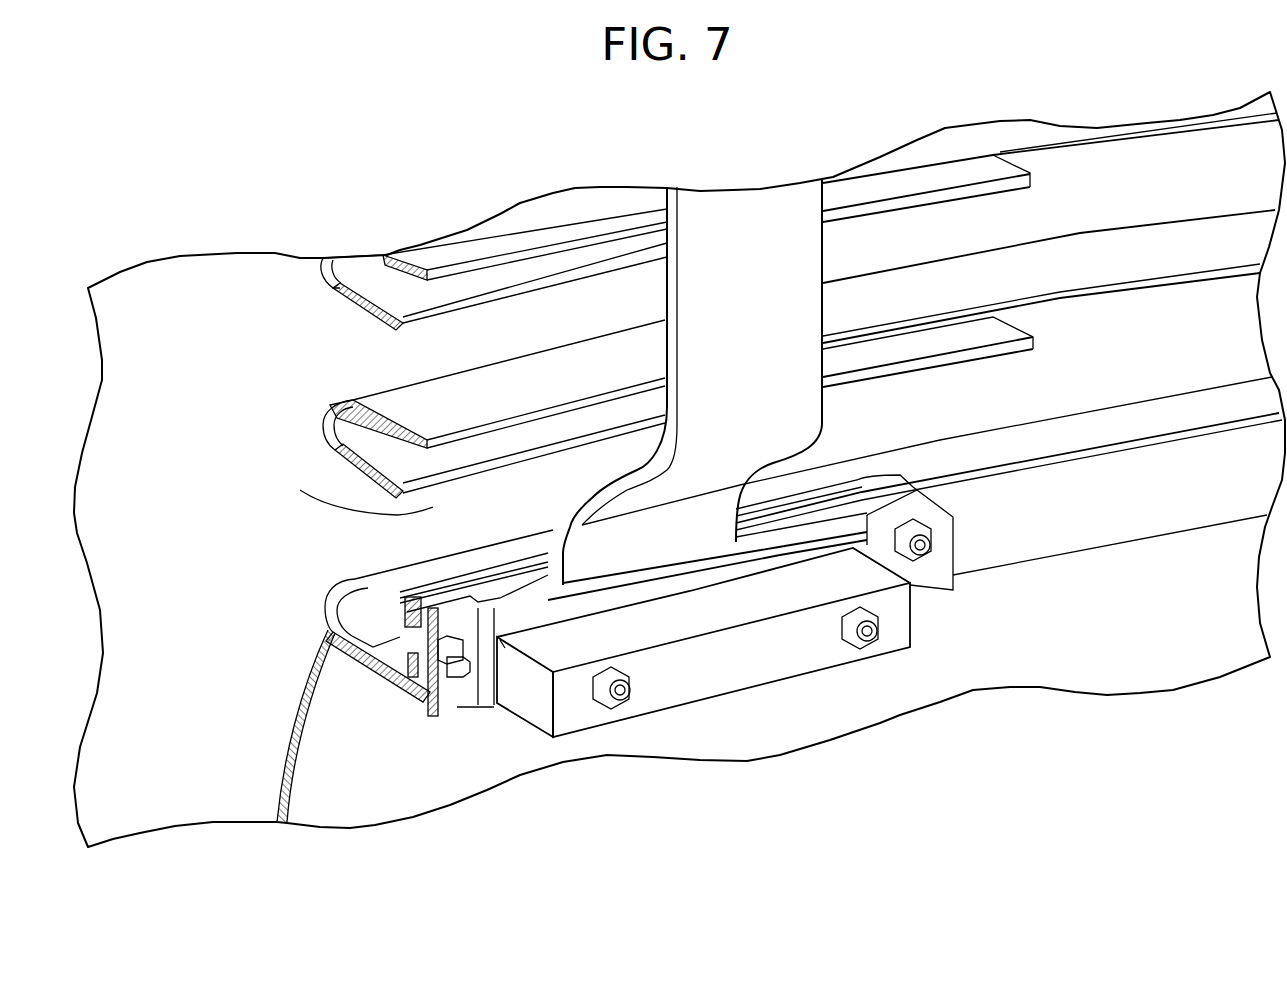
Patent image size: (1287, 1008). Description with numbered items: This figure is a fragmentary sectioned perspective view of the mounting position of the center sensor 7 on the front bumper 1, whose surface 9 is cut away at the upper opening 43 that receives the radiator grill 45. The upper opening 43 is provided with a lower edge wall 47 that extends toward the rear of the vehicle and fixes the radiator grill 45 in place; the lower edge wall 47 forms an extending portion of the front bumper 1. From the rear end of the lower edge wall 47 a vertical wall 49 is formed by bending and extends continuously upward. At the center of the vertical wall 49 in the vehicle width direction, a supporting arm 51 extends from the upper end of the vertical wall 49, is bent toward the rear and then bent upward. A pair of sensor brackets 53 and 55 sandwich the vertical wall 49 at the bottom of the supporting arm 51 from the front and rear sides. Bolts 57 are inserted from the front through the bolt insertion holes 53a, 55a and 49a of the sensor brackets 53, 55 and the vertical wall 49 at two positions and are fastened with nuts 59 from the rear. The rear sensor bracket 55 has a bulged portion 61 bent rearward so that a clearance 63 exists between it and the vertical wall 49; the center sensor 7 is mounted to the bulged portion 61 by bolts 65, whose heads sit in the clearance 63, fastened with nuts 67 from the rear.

The front bumper 1 is at (413, 806).
The center sensor 7 is at (745, 660).
The surface 9 is at (282, 735).
The upper opening 43 is at (390, 489).
The radiator grill 45 is at (322, 428).
The lower edge wall 47 is at (390, 683).
The vertical wall 49 is at (422, 695).
The bolt insertion hole 49a is at (327, 630).
The supporting arm 51 is at (745, 268).
The sensor bracket 53 is at (517, 572).
The bolt insertion hole 53a is at (327, 603).
The sensor bracket 55 is at (468, 688).
The bolt insertion hole 55a is at (505, 640).
The bolt 57 is at (400, 653).
The nut 59 is at (452, 690).
The bulged portion 61 is at (770, 555).
The clearance 63 is at (830, 517).
The bolt 65 is at (635, 696).
The nut 67 is at (620, 701).